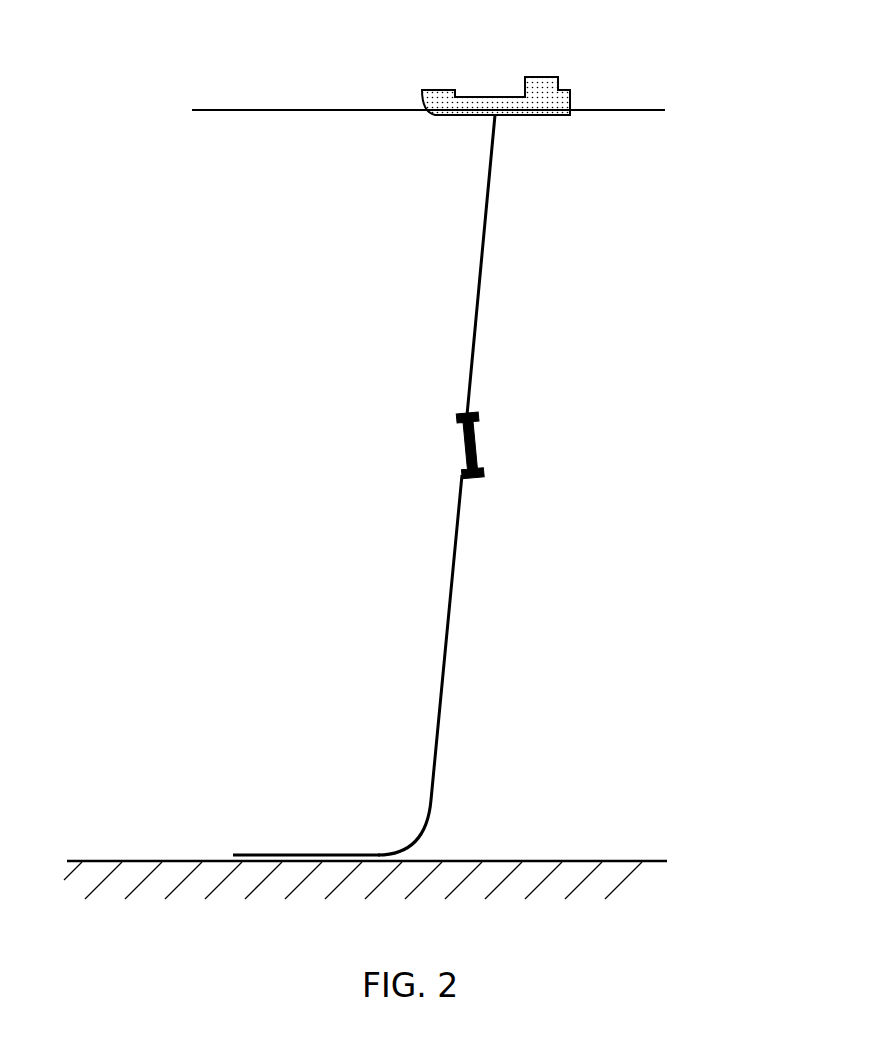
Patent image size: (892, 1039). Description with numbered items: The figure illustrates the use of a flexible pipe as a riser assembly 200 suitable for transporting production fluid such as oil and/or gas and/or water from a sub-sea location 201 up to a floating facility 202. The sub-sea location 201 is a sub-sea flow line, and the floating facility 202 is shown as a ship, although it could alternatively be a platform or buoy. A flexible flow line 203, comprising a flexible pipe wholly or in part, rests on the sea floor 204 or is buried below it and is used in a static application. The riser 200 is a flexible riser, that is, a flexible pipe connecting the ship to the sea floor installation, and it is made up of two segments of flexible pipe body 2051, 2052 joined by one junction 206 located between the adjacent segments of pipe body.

The riser assembly 200 is at (444, 485).
The sub-sea location 201 is at (284, 663).
The floating facility 202 is at (545, 77).
The flexible flow line 203 is at (310, 853).
The sea floor 204 is at (383, 933).
The segment of flexible pipe body 2051 is at (485, 272).
The segment of flexible pipe body 2052 is at (443, 682).
The junction 206 is at (462, 442).